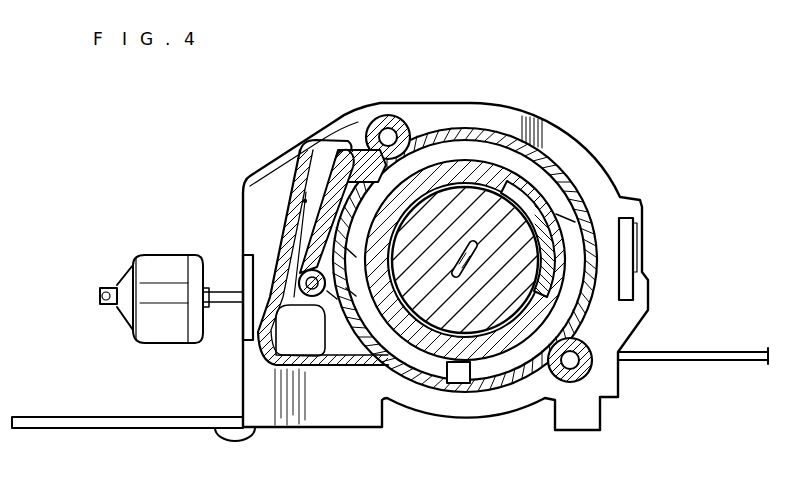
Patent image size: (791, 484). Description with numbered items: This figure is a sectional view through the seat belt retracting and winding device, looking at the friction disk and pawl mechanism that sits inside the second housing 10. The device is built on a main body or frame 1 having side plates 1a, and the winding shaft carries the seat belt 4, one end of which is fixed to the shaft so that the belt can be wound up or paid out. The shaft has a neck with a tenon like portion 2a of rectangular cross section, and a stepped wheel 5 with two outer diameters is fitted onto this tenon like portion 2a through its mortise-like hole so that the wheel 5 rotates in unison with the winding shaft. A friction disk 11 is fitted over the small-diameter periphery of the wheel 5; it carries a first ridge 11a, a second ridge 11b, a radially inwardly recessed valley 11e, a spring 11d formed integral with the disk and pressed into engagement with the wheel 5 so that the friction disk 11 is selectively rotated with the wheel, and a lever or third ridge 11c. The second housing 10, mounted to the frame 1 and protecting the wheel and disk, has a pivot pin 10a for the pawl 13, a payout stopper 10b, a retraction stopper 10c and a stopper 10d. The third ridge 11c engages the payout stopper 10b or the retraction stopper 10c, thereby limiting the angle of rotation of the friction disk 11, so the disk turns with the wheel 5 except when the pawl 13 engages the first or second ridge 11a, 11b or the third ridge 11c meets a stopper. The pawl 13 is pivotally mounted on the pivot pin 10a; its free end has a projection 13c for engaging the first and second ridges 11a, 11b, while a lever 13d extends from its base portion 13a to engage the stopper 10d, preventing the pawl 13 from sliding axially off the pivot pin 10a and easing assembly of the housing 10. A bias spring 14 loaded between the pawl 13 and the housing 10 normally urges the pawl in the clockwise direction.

The frame 1 is at (182, 428).
The side plates 1a is at (538, 128).
The tenon like portion 2a is at (476, 262).
The seat belt 4 is at (683, 355).
The stepped wheel 5 is at (497, 325).
The second housing 10 is at (440, 125).
The pivot pin 10a is at (325, 293).
The payout stopper 10b is at (565, 218).
The retraction stopper 10c is at (458, 378).
The stopper 10d is at (352, 292).
The friction disk 11 is at (470, 155).
The first ridge 11a is at (348, 155).
The second ridge 11b is at (350, 252).
The third ridge 11c is at (570, 268).
The spring 11d is at (547, 292).
The valley 11e is at (304, 201).
The pawl 13 is at (327, 142).
The base portion 13a is at (320, 312).
The projection 13c is at (343, 160).
The lever 13d is at (333, 295).
The bias spring 14 is at (245, 213).